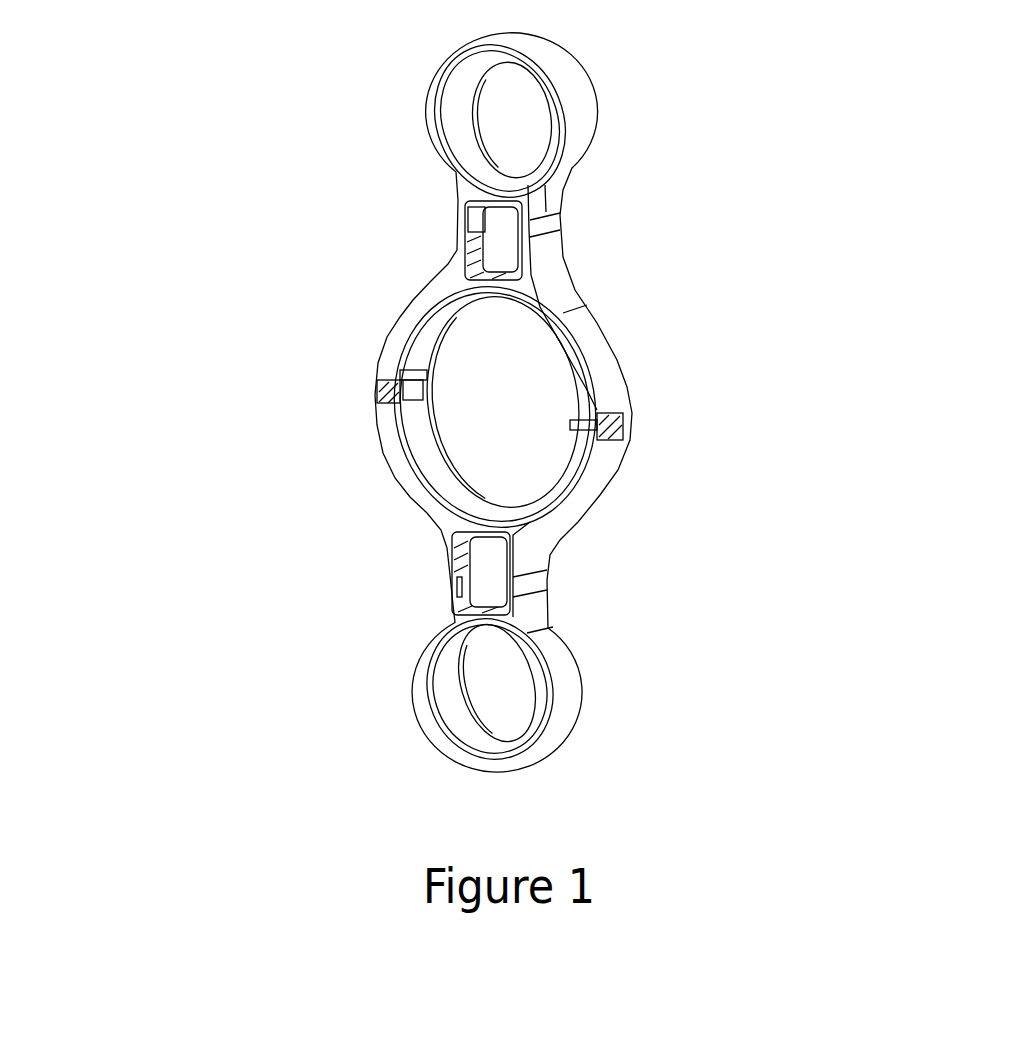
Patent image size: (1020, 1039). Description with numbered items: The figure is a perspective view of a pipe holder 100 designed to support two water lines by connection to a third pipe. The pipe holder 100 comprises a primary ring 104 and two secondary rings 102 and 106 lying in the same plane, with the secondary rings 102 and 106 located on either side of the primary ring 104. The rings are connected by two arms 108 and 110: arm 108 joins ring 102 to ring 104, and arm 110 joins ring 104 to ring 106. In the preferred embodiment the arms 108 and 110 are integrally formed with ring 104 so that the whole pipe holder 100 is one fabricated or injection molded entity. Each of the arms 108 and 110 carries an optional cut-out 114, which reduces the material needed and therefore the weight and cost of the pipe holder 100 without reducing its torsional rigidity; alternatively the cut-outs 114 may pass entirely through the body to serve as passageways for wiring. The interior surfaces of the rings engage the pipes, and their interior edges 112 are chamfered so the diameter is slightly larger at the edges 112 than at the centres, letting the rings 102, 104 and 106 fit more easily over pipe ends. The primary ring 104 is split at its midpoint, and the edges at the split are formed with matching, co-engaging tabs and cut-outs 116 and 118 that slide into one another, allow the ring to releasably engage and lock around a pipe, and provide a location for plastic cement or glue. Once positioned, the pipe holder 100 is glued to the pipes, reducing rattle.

The pipe holder 100 is at (322, 538).
The secondary ring 102 is at (433, 80).
The primary ring 104 is at (673, 317).
The secondary ring 106 is at (418, 715).
The arm 108 is at (554, 250).
The arm 110 is at (537, 588).
The interior edges 112 is at (430, 637).
The cut-outs 114 is at (503, 577).
The cut-out 116 is at (390, 363).
The cut-out 118 is at (397, 397).